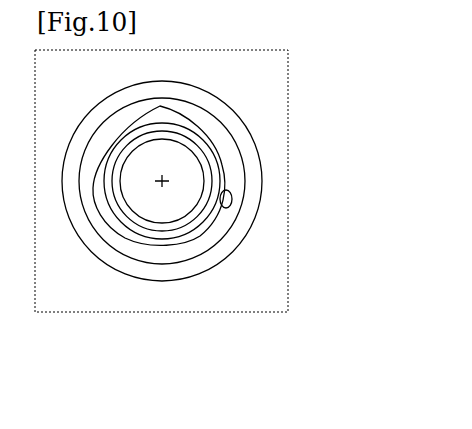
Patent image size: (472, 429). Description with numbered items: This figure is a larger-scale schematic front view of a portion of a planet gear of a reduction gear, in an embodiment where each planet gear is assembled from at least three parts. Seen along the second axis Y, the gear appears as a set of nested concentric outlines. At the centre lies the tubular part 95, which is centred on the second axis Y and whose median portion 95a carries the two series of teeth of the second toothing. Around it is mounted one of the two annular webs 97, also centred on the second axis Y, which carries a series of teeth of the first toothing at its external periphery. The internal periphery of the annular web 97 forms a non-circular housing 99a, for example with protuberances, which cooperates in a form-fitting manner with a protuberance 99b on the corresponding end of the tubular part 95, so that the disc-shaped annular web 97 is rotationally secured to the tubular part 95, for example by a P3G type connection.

The annular web 97 is at (225, 221).
The non-circular housing 99a is at (232, 203).
The protuberance 99b is at (212, 222).
The tubular part 95 is at (132, 259).
The median portion 95a is at (127, 222).
The second axis Y is at (162, 181).